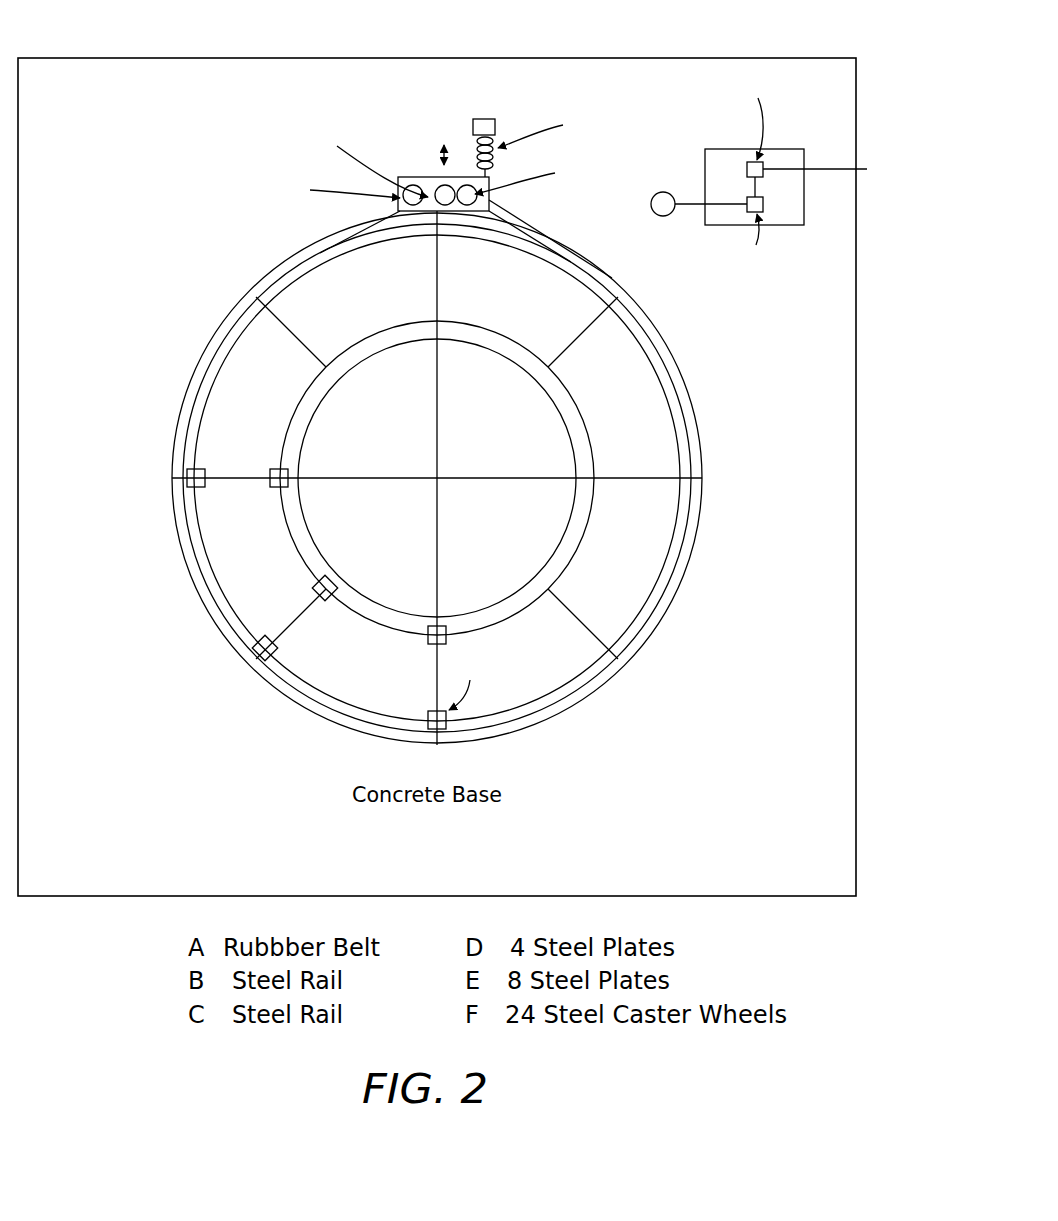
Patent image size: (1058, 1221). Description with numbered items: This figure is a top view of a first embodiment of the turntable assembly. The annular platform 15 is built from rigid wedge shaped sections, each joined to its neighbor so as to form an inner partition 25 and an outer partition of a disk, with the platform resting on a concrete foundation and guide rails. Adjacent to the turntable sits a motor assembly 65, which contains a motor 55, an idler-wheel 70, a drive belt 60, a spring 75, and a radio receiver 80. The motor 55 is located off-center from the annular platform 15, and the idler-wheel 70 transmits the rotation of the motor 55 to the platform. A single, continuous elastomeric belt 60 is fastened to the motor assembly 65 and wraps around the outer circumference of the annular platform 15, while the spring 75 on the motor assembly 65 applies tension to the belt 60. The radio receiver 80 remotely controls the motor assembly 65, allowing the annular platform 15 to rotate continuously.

The annular platform 15 is at (775, 322).
The inner partition 25 is at (491, 416).
The motor 55 is at (478, 196).
The drive belt 60 is at (541, 222).
The motor assembly 65 is at (581, 136).
The idler-wheel 70 is at (433, 182).
The spring 75 is at (466, 137).
The radio receiver 80 is at (786, 187).